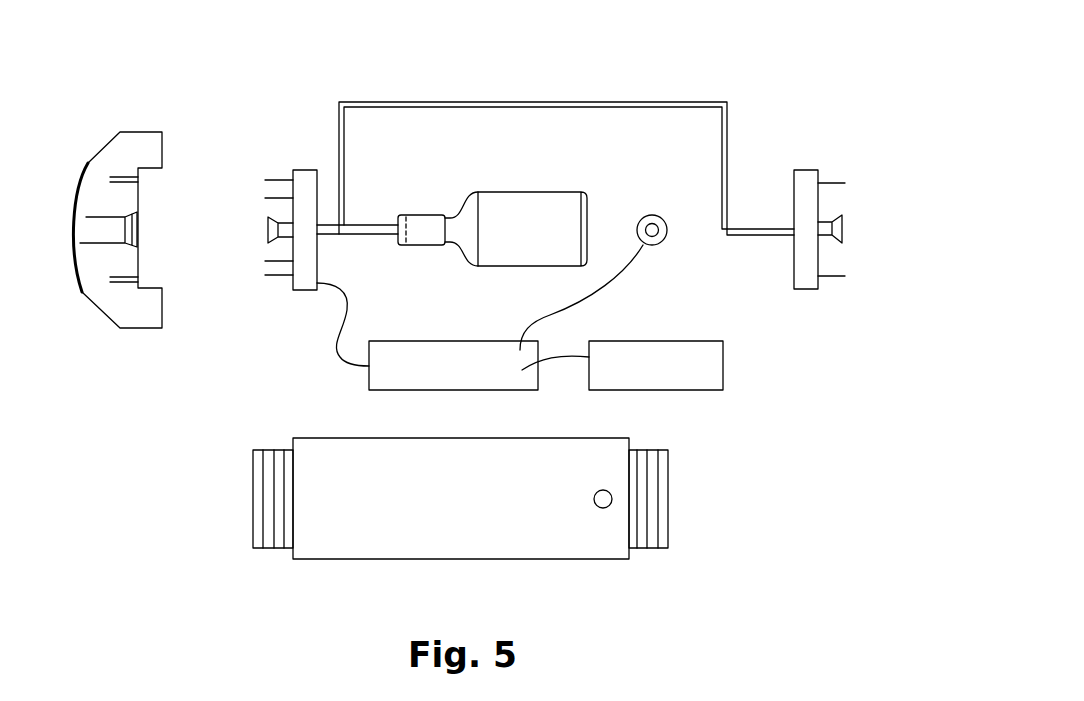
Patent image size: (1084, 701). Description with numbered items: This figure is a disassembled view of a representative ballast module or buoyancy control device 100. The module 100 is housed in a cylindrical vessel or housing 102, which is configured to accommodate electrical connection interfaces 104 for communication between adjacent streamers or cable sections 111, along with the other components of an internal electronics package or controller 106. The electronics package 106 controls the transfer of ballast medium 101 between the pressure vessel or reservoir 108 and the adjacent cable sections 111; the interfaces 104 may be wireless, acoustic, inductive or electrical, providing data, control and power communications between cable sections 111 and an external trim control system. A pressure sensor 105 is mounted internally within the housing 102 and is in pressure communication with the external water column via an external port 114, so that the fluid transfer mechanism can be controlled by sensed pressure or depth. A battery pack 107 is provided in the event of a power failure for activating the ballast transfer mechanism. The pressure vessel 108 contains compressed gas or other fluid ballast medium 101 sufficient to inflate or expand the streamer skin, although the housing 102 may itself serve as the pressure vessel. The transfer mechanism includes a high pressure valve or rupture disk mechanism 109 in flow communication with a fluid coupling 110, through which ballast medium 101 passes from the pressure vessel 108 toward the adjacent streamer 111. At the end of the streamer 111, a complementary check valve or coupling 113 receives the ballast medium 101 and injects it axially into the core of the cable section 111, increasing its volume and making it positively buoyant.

The ballast module 100 is at (667, 62).
The ballast medium 101 is at (534, 200).
The housing 102 is at (460, 523).
The electrical connection interface 104 is at (247, 180).
The pressure sensor 105 is at (651, 210).
The electronics package 106 is at (453, 352).
The battery pack 107 is at (657, 352).
The pressure vessel 108 is at (505, 203).
The rupture disk mechanism 109 is at (420, 225).
The fluid coupling 110 is at (366, 205).
The streamer 111 is at (148, 265).
The complementary coupling 113 is at (108, 223).
The external port 114 is at (598, 508).